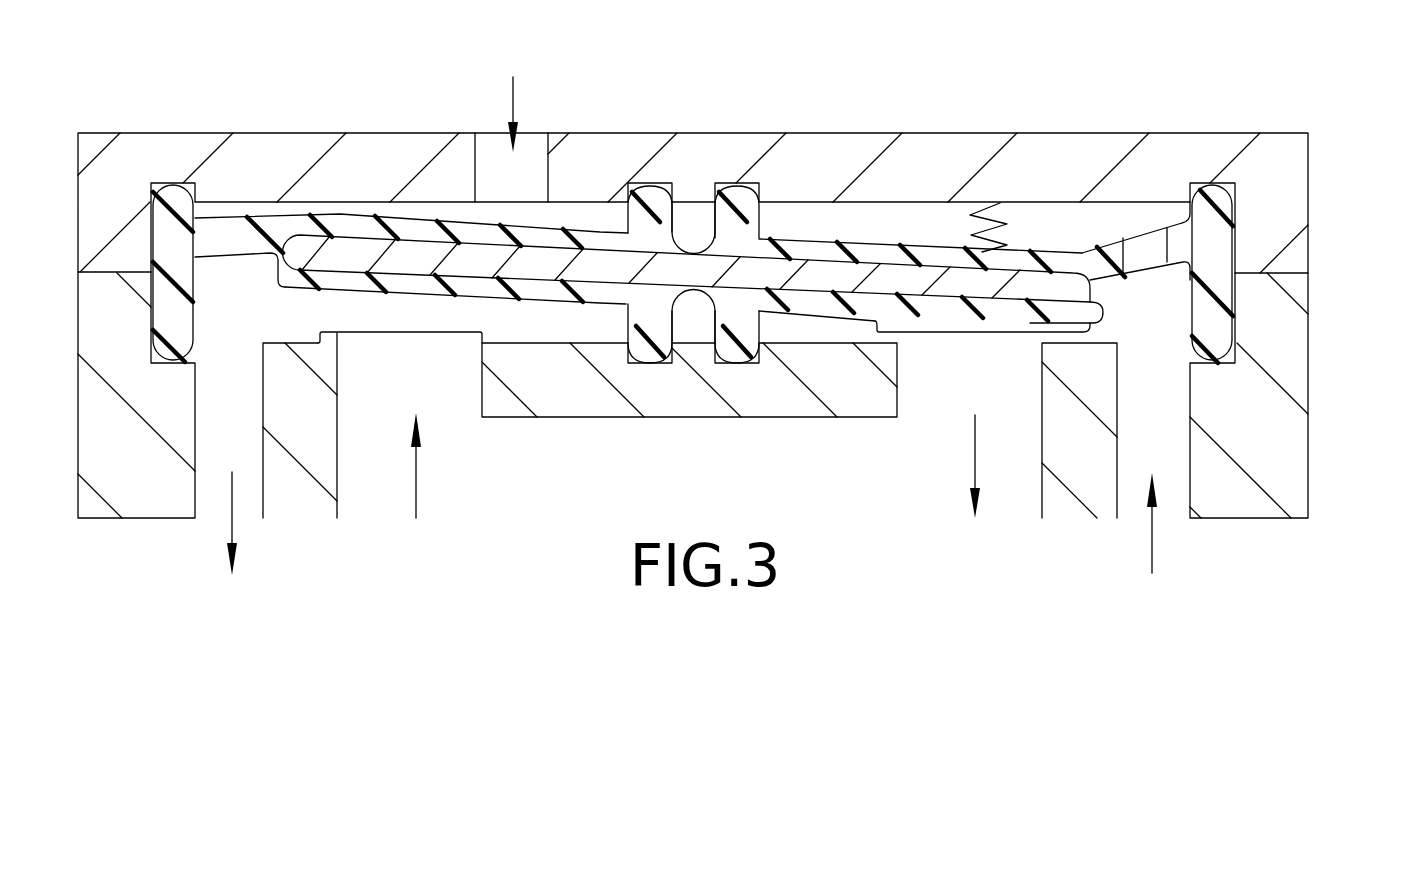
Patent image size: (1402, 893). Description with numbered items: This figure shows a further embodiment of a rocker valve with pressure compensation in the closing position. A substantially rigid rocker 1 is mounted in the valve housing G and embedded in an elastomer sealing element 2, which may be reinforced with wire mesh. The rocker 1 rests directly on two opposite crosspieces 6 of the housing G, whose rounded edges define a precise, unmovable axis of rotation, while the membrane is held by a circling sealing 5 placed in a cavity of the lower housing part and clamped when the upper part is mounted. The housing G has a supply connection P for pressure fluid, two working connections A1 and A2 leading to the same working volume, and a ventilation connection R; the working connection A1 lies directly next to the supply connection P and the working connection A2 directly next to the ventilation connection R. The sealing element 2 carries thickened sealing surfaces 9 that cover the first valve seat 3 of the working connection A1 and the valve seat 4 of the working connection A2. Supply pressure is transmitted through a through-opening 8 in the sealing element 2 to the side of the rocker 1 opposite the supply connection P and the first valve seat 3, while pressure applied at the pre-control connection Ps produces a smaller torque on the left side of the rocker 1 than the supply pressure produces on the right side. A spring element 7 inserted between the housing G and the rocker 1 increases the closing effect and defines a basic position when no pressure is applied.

The rocker 1 is at (423, 253).
The elastomer sealing element 2 is at (829, 247).
The first valve seat 3 is at (1050, 338).
The valve seat 4 is at (485, 340).
The circling sealing 5 is at (176, 195).
The crosspiece 6 is at (684, 234).
The spring element 7 is at (990, 205).
The through-opening 8 is at (1148, 252).
The sealing surfaces 9 is at (395, 303).
The valve housing G is at (1275, 162).
The pre-control connection Ps is at (517, 92).
The ventilation connection R is at (230, 528).
The working connection A1 is at (970, 452).
The working connection A2 is at (417, 468).
The supply connection P is at (1148, 543).